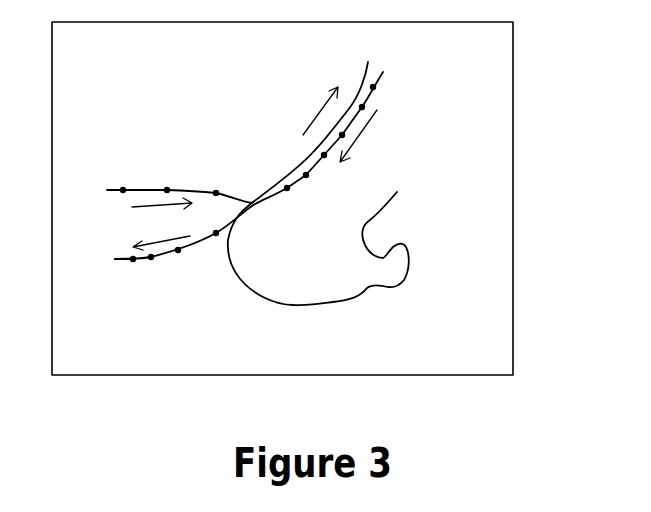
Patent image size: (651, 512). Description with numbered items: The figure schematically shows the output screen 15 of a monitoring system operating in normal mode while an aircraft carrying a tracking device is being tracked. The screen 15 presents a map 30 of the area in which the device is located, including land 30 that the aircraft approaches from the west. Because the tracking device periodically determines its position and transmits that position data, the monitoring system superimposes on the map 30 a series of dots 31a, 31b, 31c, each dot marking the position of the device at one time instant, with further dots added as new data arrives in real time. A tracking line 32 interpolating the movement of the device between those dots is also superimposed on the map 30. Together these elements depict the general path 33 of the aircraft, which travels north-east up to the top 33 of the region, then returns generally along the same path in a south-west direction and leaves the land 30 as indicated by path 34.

The output screen 15 is at (517, 172).
The map 30 is at (278, 277).
The dot 31a is at (123, 189).
The dot 31b is at (167, 189).
The dot 31c is at (216, 192).
The tracking line 32 is at (203, 247).
The path 33 is at (405, 90).
The path 34 is at (118, 263).